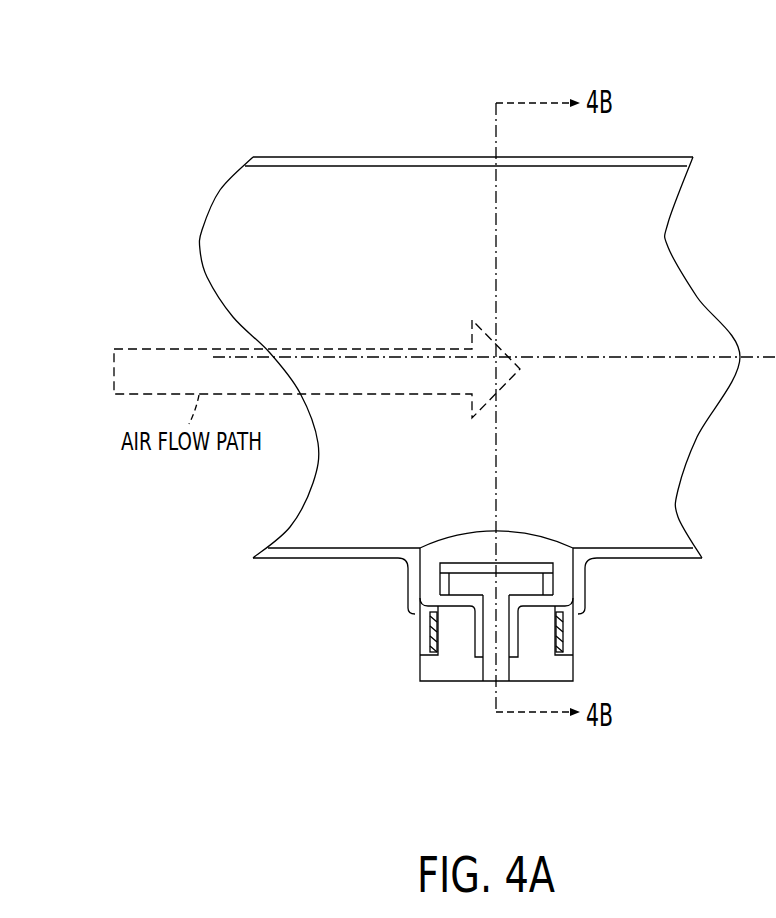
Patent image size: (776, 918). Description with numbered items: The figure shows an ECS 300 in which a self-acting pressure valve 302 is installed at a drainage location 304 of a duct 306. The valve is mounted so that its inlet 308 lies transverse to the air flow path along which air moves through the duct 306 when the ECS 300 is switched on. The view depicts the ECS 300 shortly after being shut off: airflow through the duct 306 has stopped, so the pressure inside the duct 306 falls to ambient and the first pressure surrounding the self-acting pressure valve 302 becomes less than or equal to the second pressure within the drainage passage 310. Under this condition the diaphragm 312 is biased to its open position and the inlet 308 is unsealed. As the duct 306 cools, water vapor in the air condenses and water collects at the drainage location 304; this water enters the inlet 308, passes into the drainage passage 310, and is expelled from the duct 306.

The ECS 300 is at (220, 98).
The self-acting pressure valve 302 is at (542, 550).
The drainage location 304 is at (412, 542).
The duct 306 is at (388, 188).
The inlet 308 is at (476, 582).
The drainage passage 310 is at (490, 638).
The diaphragm 312 is at (461, 562).